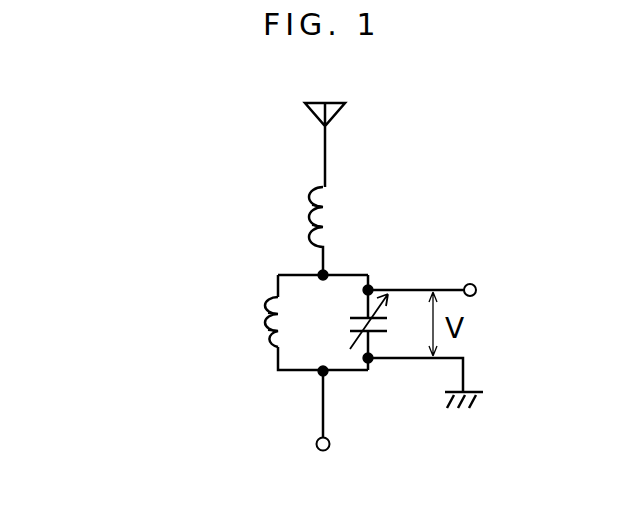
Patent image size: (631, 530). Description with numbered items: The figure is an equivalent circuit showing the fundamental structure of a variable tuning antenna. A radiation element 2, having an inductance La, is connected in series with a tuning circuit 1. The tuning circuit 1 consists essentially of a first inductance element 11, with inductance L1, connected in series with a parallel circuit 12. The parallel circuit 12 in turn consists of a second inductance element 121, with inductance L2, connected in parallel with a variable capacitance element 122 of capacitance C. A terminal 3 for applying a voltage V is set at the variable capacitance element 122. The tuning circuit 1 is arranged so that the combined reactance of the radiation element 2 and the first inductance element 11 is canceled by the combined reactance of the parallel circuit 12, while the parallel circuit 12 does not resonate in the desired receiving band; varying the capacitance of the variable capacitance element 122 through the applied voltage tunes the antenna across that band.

The tuning circuit 1 is at (70, 223).
The first inductance element 11 is at (312, 206).
The parallel circuit 12 is at (143, 305).
The second inductance element 121 is at (276, 312).
The variable capacitance element 122 is at (350, 331).
The radiation element 2 is at (313, 113).
The terminal 3 is at (476, 288).